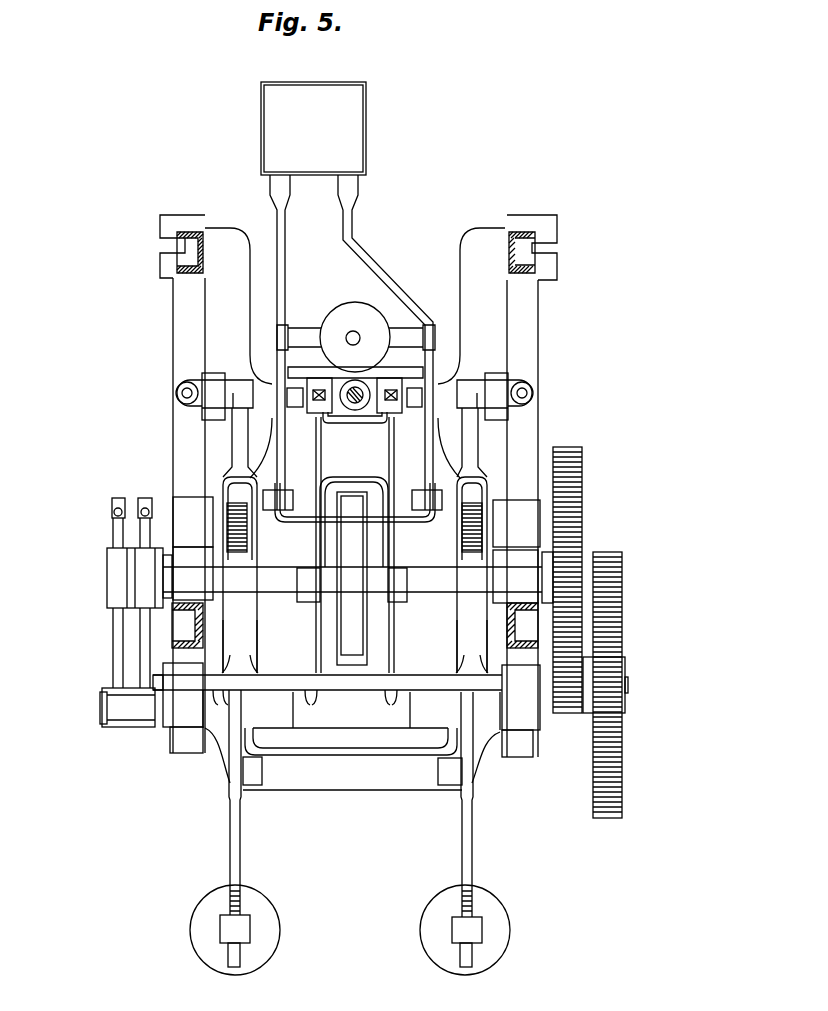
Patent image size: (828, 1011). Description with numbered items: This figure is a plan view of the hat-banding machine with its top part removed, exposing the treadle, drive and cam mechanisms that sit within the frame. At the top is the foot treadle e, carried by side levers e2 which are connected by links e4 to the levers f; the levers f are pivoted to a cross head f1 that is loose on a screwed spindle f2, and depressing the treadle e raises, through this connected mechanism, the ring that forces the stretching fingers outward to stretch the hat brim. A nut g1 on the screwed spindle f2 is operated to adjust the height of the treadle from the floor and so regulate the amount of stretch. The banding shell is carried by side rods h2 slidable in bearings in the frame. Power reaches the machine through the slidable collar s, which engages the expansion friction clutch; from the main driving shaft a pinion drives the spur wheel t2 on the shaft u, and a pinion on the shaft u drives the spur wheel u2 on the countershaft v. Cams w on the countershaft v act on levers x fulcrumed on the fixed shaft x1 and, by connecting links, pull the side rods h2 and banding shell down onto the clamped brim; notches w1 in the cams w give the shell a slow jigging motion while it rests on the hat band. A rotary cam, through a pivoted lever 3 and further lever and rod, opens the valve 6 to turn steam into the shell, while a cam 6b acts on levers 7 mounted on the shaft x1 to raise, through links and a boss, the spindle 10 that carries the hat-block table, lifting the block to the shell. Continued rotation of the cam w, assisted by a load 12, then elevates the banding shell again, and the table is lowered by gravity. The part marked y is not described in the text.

The foot treadle e is at (343, 123).
The side levers e2 is at (289, 247).
The links e4 is at (437, 492).
The nut g1 is at (354, 303).
The cross head f1 is at (306, 330).
The screwed spindle f2 is at (350, 340).
The levers f is at (428, 380).
The side rods h2 is at (548, 392).
The valve 6 is at (325, 390).
The slidable collar s is at (380, 390).
The spindle 10 is at (355, 403).
The levers x is at (477, 460).
The notches w1 is at (566, 730).
The levers 7 is at (405, 624).
The countershaft v is at (438, 582).
The cam 6b is at (352, 578).
The cams w is at (463, 642).
The shaft u is at (628, 683).
The spur wheel u2 is at (575, 525).
The spur wheel t2 is at (612, 628).
The pulley y is at (117, 540).
The pivoted lever 3 is at (142, 537).
The fixed shaft x1 is at (102, 710).
The load 12 is at (437, 937).